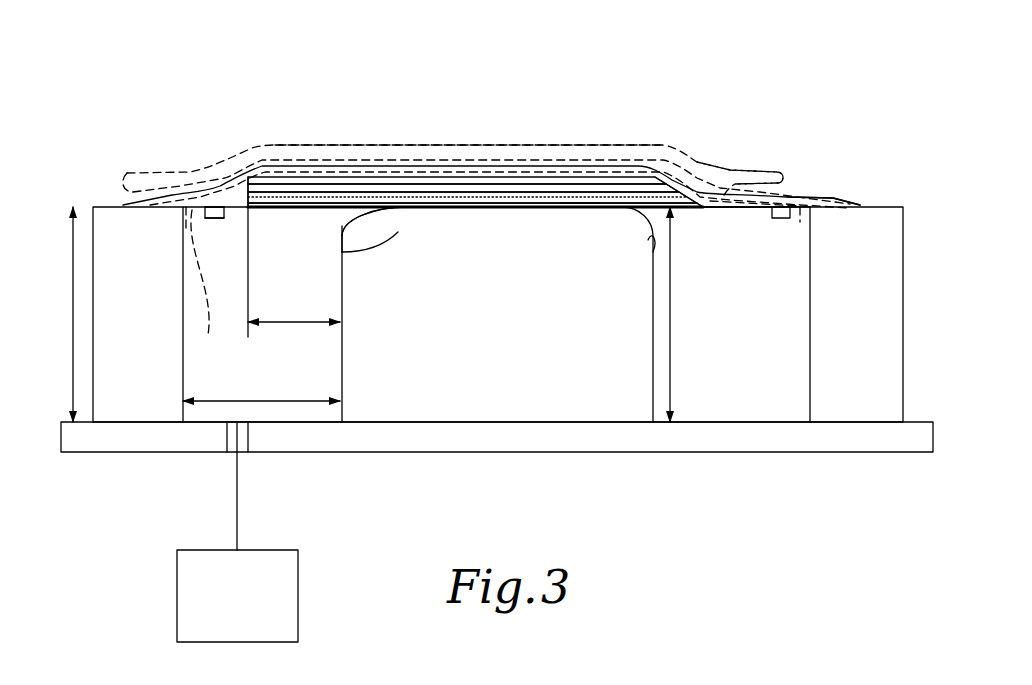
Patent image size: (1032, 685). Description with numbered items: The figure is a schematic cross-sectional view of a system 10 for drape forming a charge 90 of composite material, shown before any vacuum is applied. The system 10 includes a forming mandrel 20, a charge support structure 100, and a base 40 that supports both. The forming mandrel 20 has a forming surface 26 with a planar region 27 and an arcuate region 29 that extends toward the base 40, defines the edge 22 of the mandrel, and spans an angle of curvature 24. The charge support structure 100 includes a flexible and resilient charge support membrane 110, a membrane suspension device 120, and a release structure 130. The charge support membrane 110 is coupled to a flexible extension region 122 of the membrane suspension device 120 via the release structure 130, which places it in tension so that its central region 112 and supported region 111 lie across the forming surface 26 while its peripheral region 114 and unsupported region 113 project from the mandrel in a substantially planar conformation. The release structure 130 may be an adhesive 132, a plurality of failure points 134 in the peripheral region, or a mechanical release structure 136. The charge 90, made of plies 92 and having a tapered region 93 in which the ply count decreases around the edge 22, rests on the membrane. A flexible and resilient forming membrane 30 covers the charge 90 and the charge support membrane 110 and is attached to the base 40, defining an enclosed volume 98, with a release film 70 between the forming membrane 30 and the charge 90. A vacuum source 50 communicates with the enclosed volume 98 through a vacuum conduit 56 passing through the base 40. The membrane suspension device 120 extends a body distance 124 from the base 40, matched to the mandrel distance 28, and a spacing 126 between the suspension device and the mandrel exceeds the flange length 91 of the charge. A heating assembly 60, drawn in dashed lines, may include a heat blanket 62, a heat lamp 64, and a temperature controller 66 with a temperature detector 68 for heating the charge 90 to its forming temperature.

The system 10 is at (97, 94).
The charge support structure 100 is at (75, 185).
The heating assembly 60 is at (151, 171).
The heat blanket 62 is at (127, 172).
The heat lamp 64 is at (188, 190).
The temperature controller 66 is at (222, 160).
The temperature detector 68 is at (246, 150).
The release film 70 is at (733, 195).
The unsupported region 113 is at (272, 205).
The charge 90 is at (308, 182).
The plies 92 is at (415, 195).
The supported region 111 is at (487, 205).
The central region 112 is at (520, 205).
The tapered region 93 is at (688, 190).
The forming membrane 30 is at (820, 202).
The membrane suspension device 120 is at (152, 325).
The enclosed volume 98 is at (271, 377).
The body distance 124 is at (73, 310).
The spacing 126 is at (200, 401).
The flange length 91 is at (292, 322).
The mandrel distance 28 is at (672, 366).
The forming mandrel 20 is at (511, 357).
The angle of curvature 24 is at (398, 232).
The edge 22 is at (342, 226).
The arcuate region 29 is at (363, 228).
The planar region 27 is at (483, 218).
The forming surface 26 is at (572, 195).
The charge support membrane 110 is at (712, 212).
The peripheral region 114 is at (738, 209).
The release structure 130 is at (216, 221).
The flexible extension region 122 is at (192, 216).
The adhesive 132 is at (228, 212).
The failure points 134 is at (231, 220).
The mechanical release structure 136 is at (208, 283).
The base 40 is at (566, 440).
The vacuum conduit 56 is at (242, 515).
The vacuum source 50 is at (290, 616).